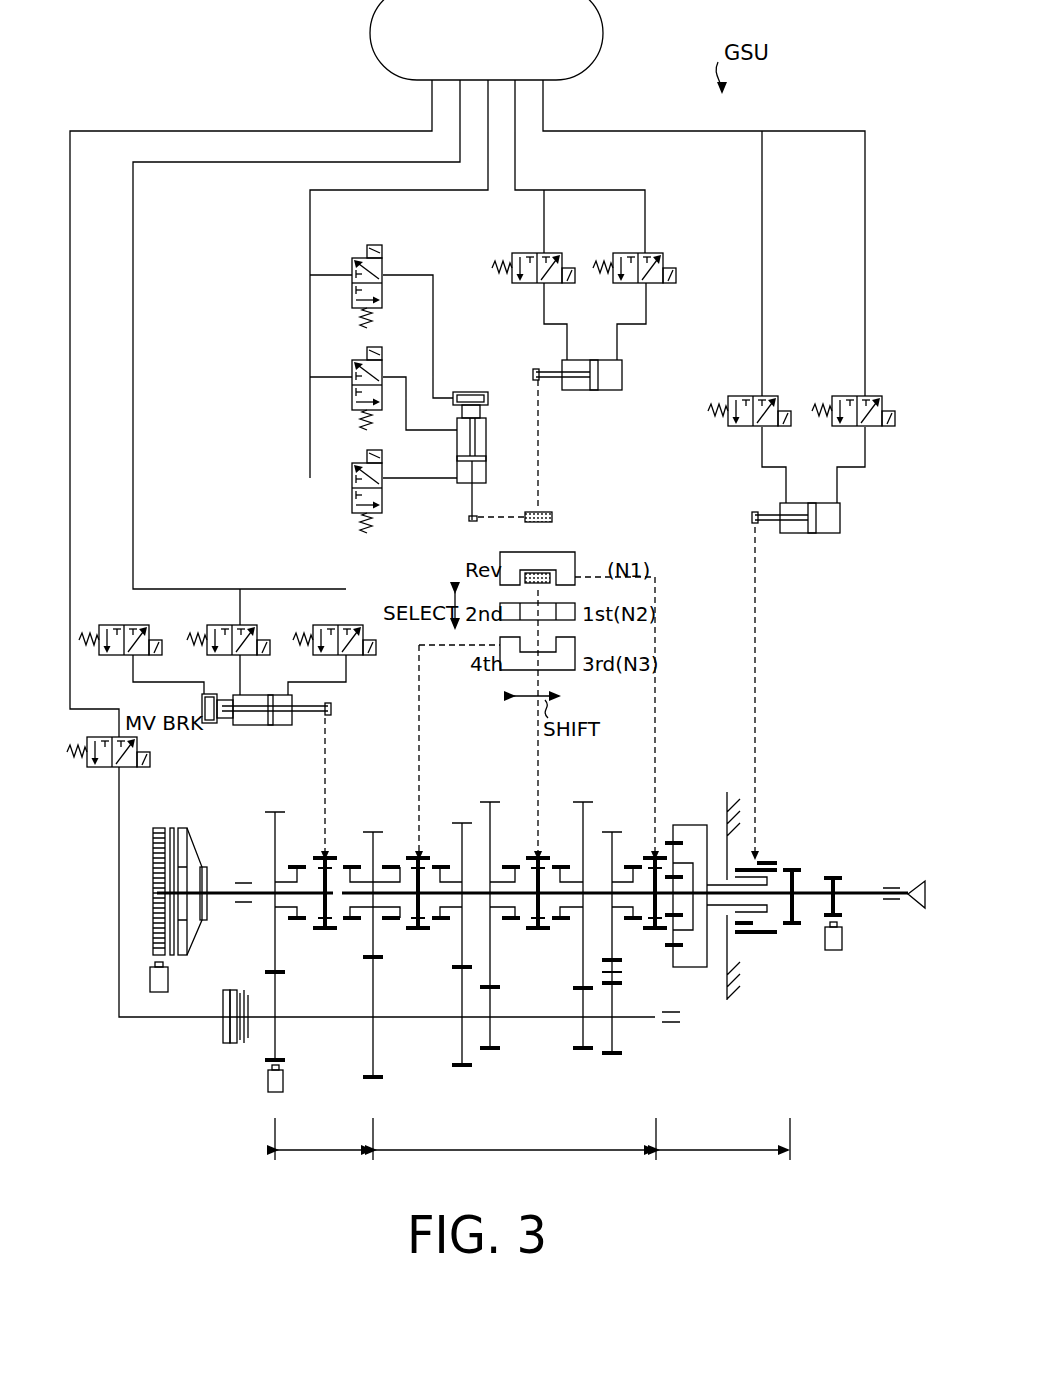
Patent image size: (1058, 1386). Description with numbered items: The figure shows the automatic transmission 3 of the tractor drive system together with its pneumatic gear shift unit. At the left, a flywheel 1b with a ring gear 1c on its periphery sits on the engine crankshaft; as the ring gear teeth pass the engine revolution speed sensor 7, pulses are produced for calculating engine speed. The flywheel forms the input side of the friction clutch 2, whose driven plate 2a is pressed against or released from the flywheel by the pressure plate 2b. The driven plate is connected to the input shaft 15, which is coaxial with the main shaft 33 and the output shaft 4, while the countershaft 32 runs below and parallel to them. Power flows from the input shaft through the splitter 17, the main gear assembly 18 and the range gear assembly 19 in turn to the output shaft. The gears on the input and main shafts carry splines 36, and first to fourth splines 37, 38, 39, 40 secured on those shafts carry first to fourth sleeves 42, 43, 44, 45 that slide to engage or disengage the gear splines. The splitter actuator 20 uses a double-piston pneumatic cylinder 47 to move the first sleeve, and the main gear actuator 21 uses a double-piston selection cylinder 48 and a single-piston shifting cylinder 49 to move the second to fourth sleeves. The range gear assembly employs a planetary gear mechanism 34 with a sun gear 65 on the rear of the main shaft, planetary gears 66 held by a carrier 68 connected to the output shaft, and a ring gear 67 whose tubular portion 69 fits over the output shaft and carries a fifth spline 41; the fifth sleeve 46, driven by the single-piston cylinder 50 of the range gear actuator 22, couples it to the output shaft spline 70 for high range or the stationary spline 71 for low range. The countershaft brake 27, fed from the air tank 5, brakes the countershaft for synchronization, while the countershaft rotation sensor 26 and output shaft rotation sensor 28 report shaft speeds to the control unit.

The flywheel 1b is at (157, 828).
The ring gear 1c is at (157, 895).
The clutch 2 is at (180, 846).
The driven plate 2a is at (172, 828).
The pressure plate 2b is at (189, 834).
The transmission 3 is at (565, 975).
The output shaft 4 is at (804, 893).
The air tank 5 is at (494, 51).
The engine revolution speed sensor 7 is at (165, 982).
The input shaft 15 is at (268, 903).
The splitter 17 is at (324, 1149).
The main gear assembly 18 is at (515, 1149).
The range gear assembly 19 is at (724, 1149).
The splitter actuator 20 is at (227, 636).
The main gear actuator 21 is at (499, 379).
The range gear actuator 22 is at (801, 498).
The countershaft rotation sensor 26 is at (272, 1088).
The countershaft brake 27 is at (237, 1052).
The output shaft rotation sensor 28 is at (843, 940).
The countershaft 32 is at (532, 1022).
The main shaft 33 is at (605, 898).
The planetary gear mechanism 34 is at (742, 917).
The splines 36 is at (465, 907).
The first spline 37 is at (326, 932).
The second spline 38 is at (424, 932).
The third spline 39 is at (546, 932).
The fourth spline 40 is at (660, 932).
The fifth spline 41 is at (780, 925).
The first sleeve 42 is at (330, 853).
The second sleeve 43 is at (424, 853).
The third sleeve 44 is at (544, 853).
The fourth sleeve 45 is at (652, 853).
The fifth sleeve 46 is at (763, 860).
The pneumatic cylinder 47 is at (280, 727).
The pneumatic cylinder 48 is at (488, 443).
The pneumatic cylinder 49 is at (606, 392).
The pneumatic cylinder 50 is at (840, 520).
The sun gear 65 is at (674, 887).
The planetary gears 66 is at (676, 850).
The ring gear 67 is at (690, 847).
The carrier 68 is at (698, 927).
The tubular portion 69 is at (712, 915).
The output shaft spline 70 is at (792, 927).
The stationary spline 71 is at (747, 932).